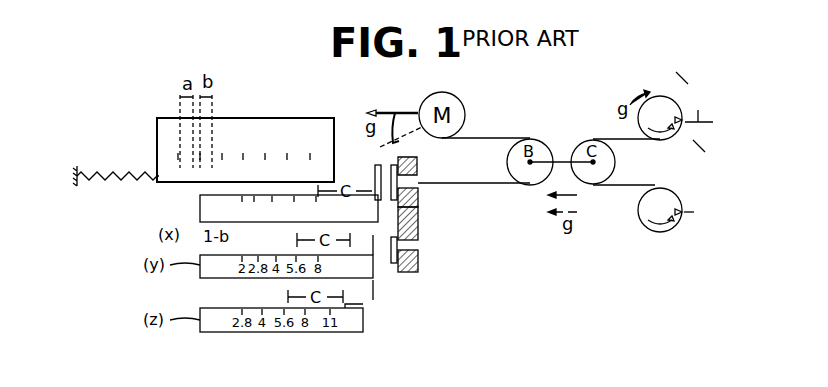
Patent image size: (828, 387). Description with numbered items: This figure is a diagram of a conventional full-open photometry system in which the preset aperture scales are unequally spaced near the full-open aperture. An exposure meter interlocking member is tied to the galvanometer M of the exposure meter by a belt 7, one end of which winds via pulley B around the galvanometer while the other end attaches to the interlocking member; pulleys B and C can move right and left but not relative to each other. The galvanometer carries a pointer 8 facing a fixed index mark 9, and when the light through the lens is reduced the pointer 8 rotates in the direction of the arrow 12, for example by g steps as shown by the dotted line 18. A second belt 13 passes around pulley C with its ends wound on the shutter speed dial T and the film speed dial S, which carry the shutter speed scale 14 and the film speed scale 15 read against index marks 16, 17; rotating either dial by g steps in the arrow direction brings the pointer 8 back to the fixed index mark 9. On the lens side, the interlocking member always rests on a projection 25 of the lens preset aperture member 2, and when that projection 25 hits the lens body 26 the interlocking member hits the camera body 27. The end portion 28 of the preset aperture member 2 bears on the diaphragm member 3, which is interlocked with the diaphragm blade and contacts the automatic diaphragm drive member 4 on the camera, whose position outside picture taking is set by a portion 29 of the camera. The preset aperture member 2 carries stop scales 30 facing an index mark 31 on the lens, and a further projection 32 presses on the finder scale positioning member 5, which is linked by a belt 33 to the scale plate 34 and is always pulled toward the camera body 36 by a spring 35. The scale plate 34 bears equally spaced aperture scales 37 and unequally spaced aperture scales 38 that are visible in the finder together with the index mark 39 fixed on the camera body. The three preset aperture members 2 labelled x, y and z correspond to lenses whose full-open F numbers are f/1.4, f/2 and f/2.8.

The lens preset aperture member 2 is at (350, 348).
The diaphragm member 3 is at (392, 218).
The automatic diaphragm drive member 4 is at (386, 262).
The finder scale positioning member 5 is at (380, 162).
The belt 7 is at (495, 134).
The pointer 8 is at (417, 100).
The fixed index mark 9 is at (369, 107).
The arrow 12 is at (396, 112).
The belt 13 is at (609, 137).
The shutter speed scale 14 is at (678, 78).
The film speed scale 15 is at (676, 248).
The index mark 16 is at (690, 116).
The index mark 17 is at (688, 204).
The dotted line 18 is at (423, 159).
The projection 25 is at (418, 194).
The lens body 26 is at (416, 235).
The camera body 27 is at (420, 170).
The end portion 28 is at (418, 216).
The portion of the camera 29 is at (416, 266).
The stop scales 30 is at (200, 212).
The index mark 31 is at (244, 187).
The projection 32 is at (375, 183).
The belt 33 is at (348, 163).
The scale plate 34 is at (274, 132).
The spring 35 is at (103, 171).
The camera body 36 is at (76, 166).
The equally spaced aperture scales 37 is at (312, 157).
The unequally spaced aperture scales 38 is at (210, 127).
The index mark 39 is at (186, 115).